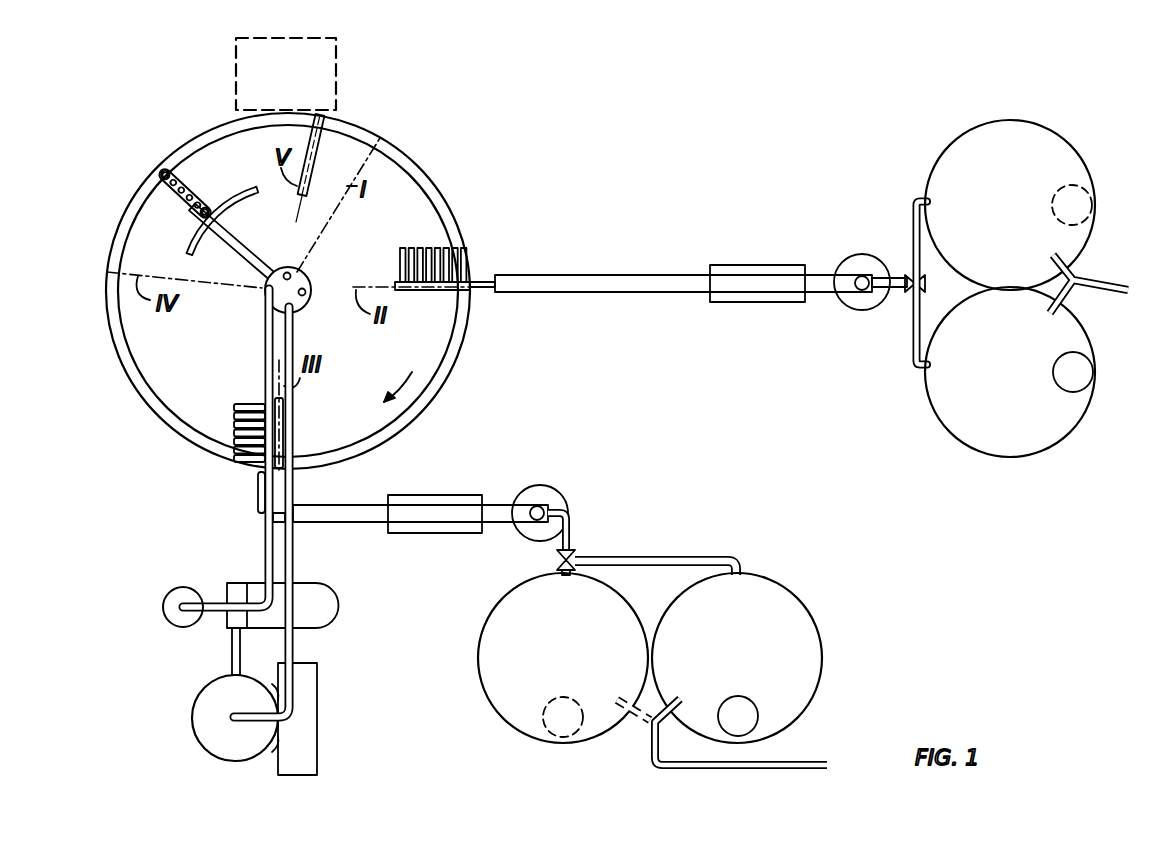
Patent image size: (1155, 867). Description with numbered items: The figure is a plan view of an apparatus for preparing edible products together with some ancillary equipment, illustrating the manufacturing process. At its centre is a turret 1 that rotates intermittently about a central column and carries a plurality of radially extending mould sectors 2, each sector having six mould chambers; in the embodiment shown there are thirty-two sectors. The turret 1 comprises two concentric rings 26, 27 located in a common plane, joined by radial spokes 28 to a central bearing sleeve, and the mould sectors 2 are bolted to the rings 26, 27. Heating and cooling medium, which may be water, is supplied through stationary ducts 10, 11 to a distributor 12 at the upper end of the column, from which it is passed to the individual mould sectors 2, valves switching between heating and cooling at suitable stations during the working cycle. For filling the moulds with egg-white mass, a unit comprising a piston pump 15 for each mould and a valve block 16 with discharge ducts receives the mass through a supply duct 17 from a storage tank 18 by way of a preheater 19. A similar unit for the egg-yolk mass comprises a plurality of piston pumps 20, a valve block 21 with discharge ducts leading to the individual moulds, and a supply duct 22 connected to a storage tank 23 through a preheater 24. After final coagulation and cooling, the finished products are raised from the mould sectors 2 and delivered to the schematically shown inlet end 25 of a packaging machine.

The turret 1 is at (450, 375).
The mould sector 2 is at (191, 186).
The stationary duct 10 is at (293, 558).
The stationary duct 11 is at (265, 558).
The distributor 12 is at (306, 280).
The piston pump 15 is at (422, 248).
The valve block 16 is at (462, 292).
The supply duct 17 is at (556, 286).
The storage tank 18 is at (937, 388).
The preheater 19 is at (760, 267).
The piston pump 20 is at (233, 424).
The valve block 21 is at (289, 434).
The supply duct 22 is at (335, 510).
The storage tank 23 is at (495, 622).
The preheater 24 is at (455, 498).
The inlet end of packaging machine 25 is at (322, 78).
The concentric ring 26 is at (243, 205).
The concentric ring 27 is at (137, 205).
The radial spoke 28 is at (238, 248).